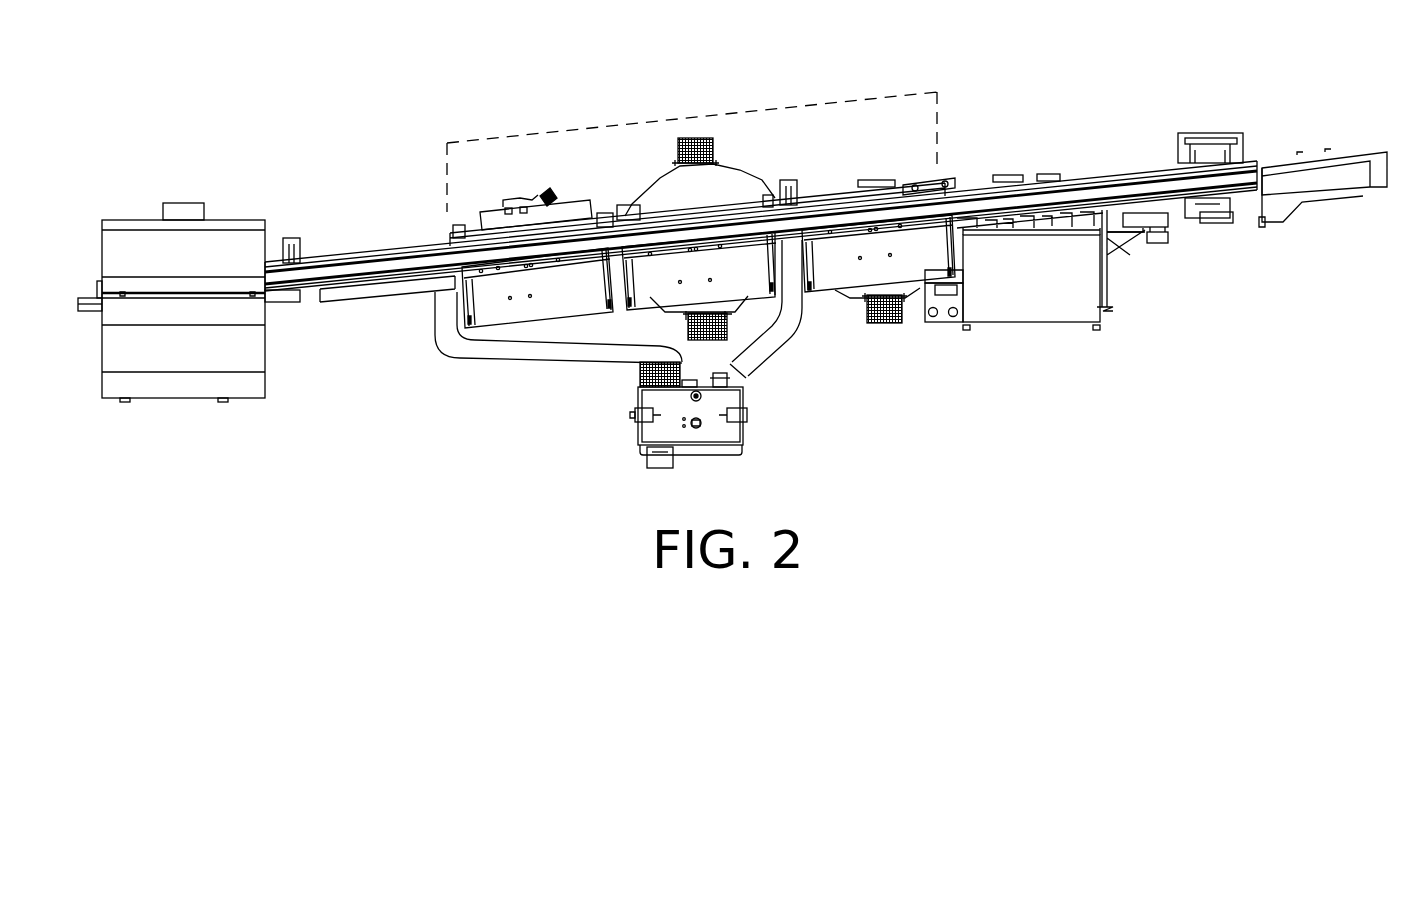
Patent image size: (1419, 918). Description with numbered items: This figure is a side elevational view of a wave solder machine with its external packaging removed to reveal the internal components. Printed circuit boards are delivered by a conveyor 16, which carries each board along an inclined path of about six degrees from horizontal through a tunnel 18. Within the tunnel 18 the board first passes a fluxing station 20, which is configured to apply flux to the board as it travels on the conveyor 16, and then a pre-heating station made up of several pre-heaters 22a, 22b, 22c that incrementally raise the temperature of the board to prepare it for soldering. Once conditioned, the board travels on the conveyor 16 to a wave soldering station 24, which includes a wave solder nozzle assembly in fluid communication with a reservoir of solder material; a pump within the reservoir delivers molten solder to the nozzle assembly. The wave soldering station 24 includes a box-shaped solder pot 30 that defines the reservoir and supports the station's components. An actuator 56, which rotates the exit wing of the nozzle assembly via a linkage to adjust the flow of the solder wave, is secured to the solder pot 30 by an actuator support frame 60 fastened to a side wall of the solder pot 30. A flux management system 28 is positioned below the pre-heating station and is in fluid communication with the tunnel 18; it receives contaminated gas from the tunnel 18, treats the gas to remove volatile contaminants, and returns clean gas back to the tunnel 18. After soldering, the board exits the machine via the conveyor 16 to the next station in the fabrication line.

The conveyor 16 is at (383, 268).
The tunnel 18 is at (568, 158).
The fluxing station 20 is at (136, 197).
The pre-heater 22a is at (540, 198).
The pre-heater 22b is at (685, 205).
The pre-heater 22c is at (852, 185).
The wave soldering station 24 is at (1034, 163).
The flux management system 28 is at (757, 452).
The solder pot 30 is at (1028, 302).
The actuator 56 is at (1163, 223).
The actuator support frame 60 is at (1115, 247).